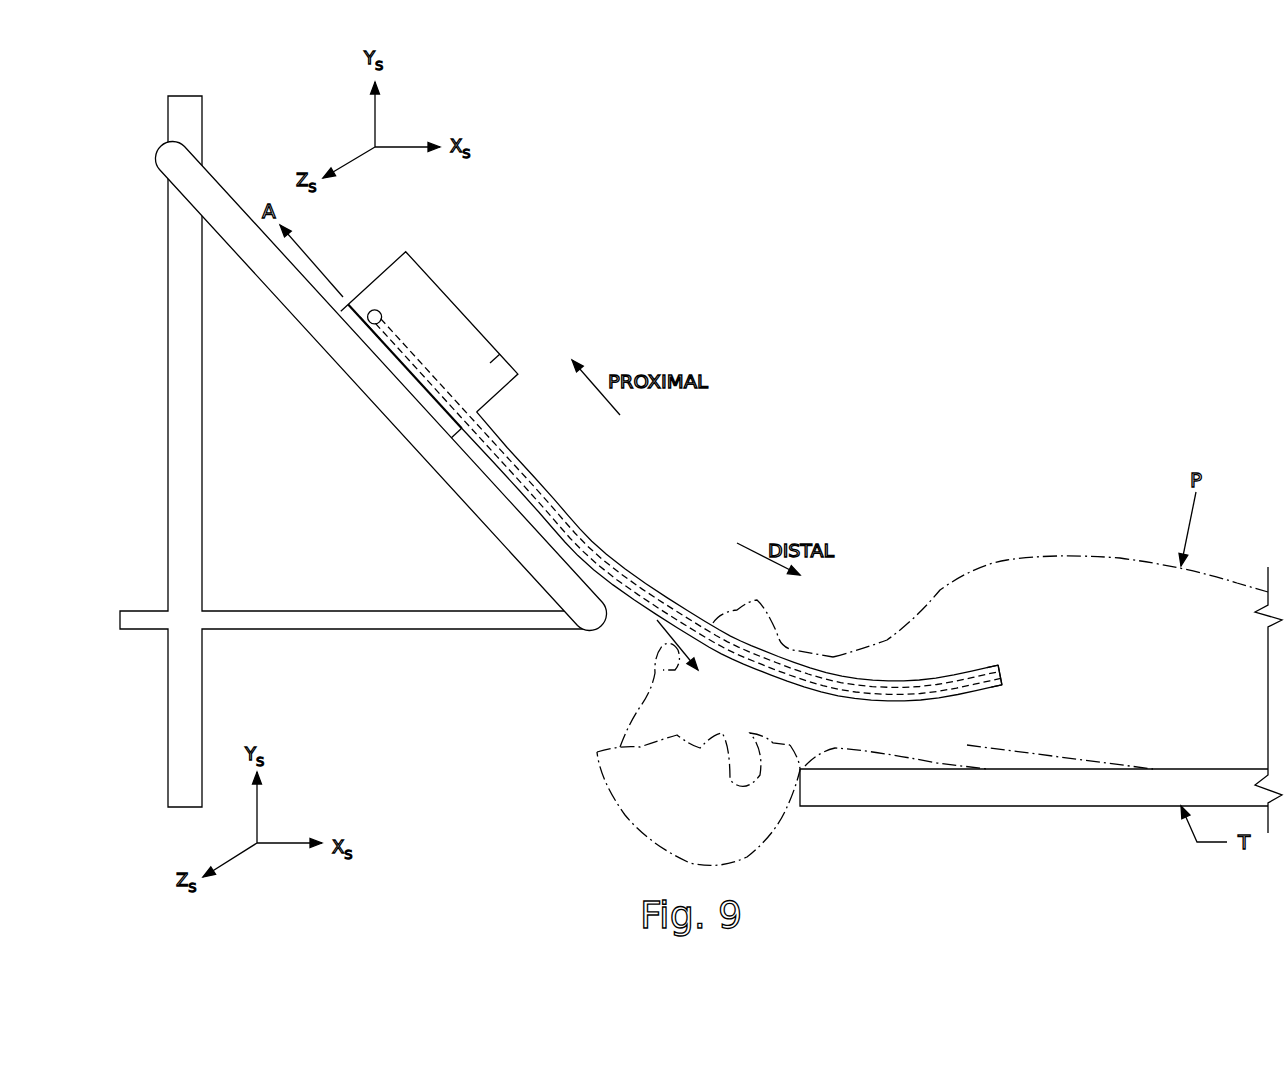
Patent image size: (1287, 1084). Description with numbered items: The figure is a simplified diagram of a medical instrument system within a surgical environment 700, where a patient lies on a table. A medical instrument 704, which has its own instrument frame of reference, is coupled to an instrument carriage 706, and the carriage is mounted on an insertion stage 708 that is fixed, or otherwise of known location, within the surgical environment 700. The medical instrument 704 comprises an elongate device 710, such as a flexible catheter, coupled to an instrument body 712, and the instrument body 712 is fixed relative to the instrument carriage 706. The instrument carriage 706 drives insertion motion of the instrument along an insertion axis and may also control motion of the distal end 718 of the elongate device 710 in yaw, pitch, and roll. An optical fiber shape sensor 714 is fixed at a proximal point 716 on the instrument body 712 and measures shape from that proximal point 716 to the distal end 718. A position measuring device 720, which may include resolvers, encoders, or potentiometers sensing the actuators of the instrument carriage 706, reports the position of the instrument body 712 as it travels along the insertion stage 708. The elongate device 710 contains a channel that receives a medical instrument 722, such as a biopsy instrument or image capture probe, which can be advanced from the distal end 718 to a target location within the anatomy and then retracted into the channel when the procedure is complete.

The surgical environment 700 is at (929, 140).
The medical instrument 704 is at (431, 298).
The instrument carriage 706 is at (410, 387).
The insertion stage 708 is at (448, 485).
The elongate device 710 is at (590, 533).
The instrument body 712 is at (486, 340).
The optical fiber shape sensor 714 is at (650, 574).
The proximal point 716 is at (373, 310).
The distal end 718 is at (987, 694).
The position measuring device 720 is at (372, 342).
The medical instrument 722 is at (1035, 654).